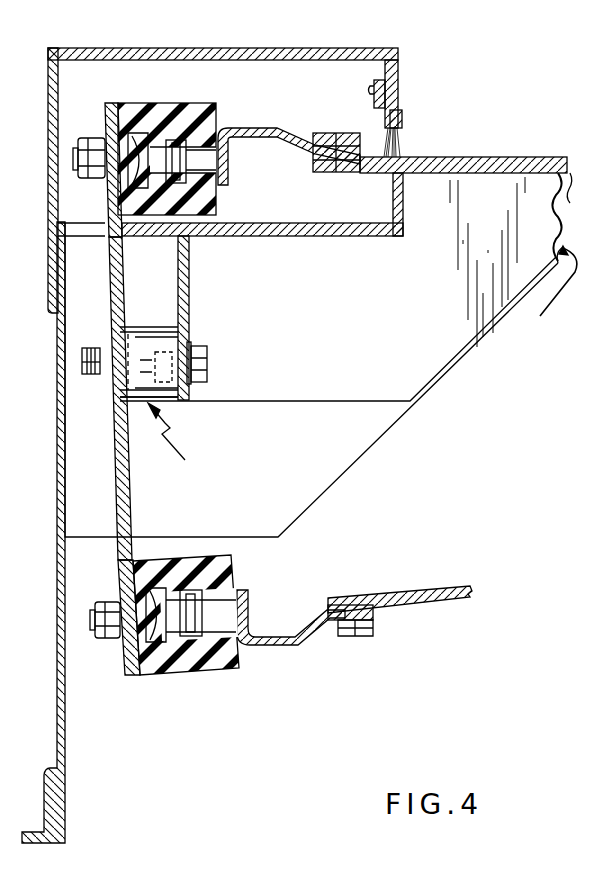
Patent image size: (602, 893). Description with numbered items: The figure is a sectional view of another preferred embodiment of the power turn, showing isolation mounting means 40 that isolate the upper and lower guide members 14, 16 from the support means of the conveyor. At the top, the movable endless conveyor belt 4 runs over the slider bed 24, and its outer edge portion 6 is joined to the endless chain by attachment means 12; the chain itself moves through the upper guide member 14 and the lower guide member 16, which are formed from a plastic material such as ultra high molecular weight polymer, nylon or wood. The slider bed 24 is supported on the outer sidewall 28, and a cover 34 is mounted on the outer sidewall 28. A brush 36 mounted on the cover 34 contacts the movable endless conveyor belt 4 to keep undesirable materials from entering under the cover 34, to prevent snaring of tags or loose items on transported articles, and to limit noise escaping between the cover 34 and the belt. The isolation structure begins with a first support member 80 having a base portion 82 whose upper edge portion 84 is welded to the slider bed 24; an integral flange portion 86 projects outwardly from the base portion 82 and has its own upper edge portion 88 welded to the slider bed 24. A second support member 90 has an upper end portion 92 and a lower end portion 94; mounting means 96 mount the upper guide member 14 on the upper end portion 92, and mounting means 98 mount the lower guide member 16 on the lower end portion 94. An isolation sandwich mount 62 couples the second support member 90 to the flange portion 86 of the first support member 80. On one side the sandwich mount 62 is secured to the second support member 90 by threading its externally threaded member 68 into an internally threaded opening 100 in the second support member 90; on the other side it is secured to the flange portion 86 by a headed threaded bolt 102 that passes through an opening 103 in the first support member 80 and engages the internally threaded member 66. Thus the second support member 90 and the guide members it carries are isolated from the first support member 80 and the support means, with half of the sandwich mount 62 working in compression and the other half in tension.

The movable endless conveyor belt 4 is at (480, 157).
The outer edge portion 6 is at (318, 166).
The attachment means 12 is at (283, 112).
The upper guide member 14 is at (158, 107).
The lower guide member 16 is at (183, 660).
The slider bed 24 is at (516, 260).
The outer sidewall 28 is at (57, 433).
The cover 34 is at (328, 60).
The brush 36 is at (398, 148).
The isolation mounting means 40 is at (177, 443).
The isolation sandwich mount 62 is at (149, 330).
The internally threaded member 66 is at (200, 395).
The externally threaded member 68 is at (92, 376).
The first support member 80 is at (546, 292).
The base portion 82 is at (366, 310).
The upper edge portion 84 is at (438, 178).
The flange portion 86 is at (190, 295).
The upper edge portion 88 is at (198, 240).
The second support member 90 is at (116, 480).
The upper end portion 92 is at (105, 104).
The lower end portion 94 is at (127, 652).
The mounting means 96 is at (108, 172).
The mounting means 98 is at (118, 600).
The internally threaded opening 100 is at (110, 352).
The headed threaded bolt 102 is at (208, 362).
The opening 103 is at (192, 340).